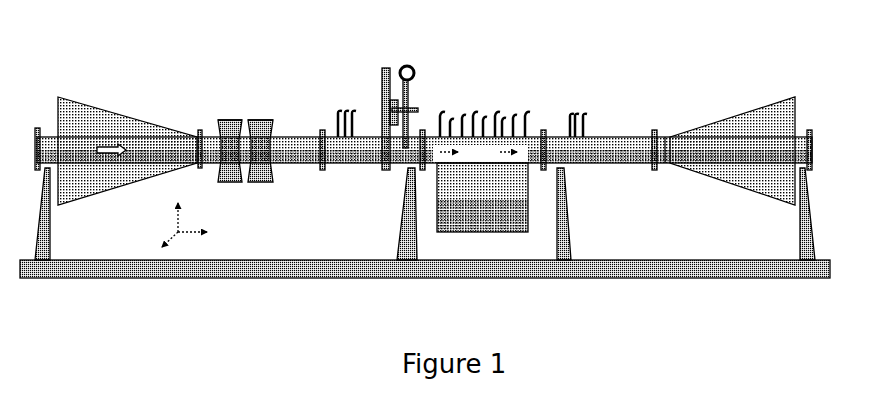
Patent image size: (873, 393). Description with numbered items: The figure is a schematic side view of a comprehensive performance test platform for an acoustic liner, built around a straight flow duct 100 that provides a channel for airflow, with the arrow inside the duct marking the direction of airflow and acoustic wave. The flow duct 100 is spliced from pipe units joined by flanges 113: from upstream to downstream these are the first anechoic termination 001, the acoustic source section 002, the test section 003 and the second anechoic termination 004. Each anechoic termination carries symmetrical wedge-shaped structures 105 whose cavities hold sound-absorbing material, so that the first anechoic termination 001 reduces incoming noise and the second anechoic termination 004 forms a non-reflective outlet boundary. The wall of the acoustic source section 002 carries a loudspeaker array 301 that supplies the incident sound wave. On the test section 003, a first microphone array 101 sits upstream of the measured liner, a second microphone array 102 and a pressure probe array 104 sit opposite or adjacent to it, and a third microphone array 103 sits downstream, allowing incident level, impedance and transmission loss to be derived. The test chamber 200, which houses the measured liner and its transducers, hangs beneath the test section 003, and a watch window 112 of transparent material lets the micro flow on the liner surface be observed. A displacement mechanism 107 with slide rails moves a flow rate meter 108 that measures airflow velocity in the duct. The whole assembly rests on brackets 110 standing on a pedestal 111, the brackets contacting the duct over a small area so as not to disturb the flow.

The first anechoic termination 001 is at (192, 157).
The acoustic source section 002 is at (297, 137).
The test section 003 is at (378, 137).
The second anechoic termination 004 is at (665, 142).
The flow duct 100 is at (350, 158).
The first microphone array 101 is at (333, 108).
The second microphone array 102 is at (473, 110).
The third microphone array 103 is at (577, 108).
The pressure probe array 104 is at (555, 99).
The wedge-shaped structure 105 is at (127, 122).
The displacement mechanism 107 is at (380, 98).
The flow rate meter 108 is at (413, 75).
The bracket 110 is at (570, 217).
The pedestal 111 is at (568, 264).
The watch window 112 is at (438, 152).
The flange 113 is at (655, 168).
The test chamber 200 is at (485, 210).
The loudspeaker array 301 is at (220, 123).